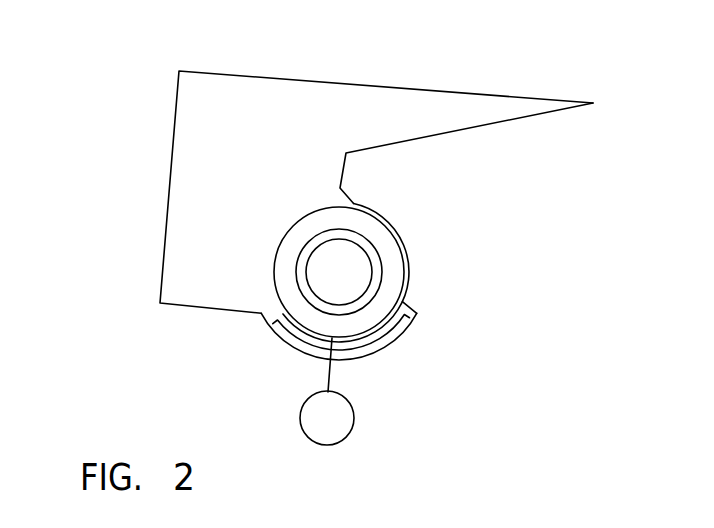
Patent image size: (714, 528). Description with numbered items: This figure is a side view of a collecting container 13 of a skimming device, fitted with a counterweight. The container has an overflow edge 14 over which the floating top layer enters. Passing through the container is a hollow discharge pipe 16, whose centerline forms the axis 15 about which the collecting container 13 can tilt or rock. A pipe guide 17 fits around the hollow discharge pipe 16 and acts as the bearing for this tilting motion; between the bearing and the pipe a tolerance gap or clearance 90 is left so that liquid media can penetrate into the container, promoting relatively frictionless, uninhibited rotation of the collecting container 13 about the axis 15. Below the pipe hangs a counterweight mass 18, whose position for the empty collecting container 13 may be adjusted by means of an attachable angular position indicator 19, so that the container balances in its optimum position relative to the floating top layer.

The collecting container 13 is at (170, 153).
The overflow edge 14 is at (537, 103).
The axis 15 is at (342, 290).
The hollow discharge pipe 16 is at (373, 232).
The pipe guide 17 is at (287, 277).
The counterweight mass 18 is at (338, 423).
The attachable angular position indicator 19 is at (282, 340).
The tolerance gap or clearance 90 is at (376, 253).